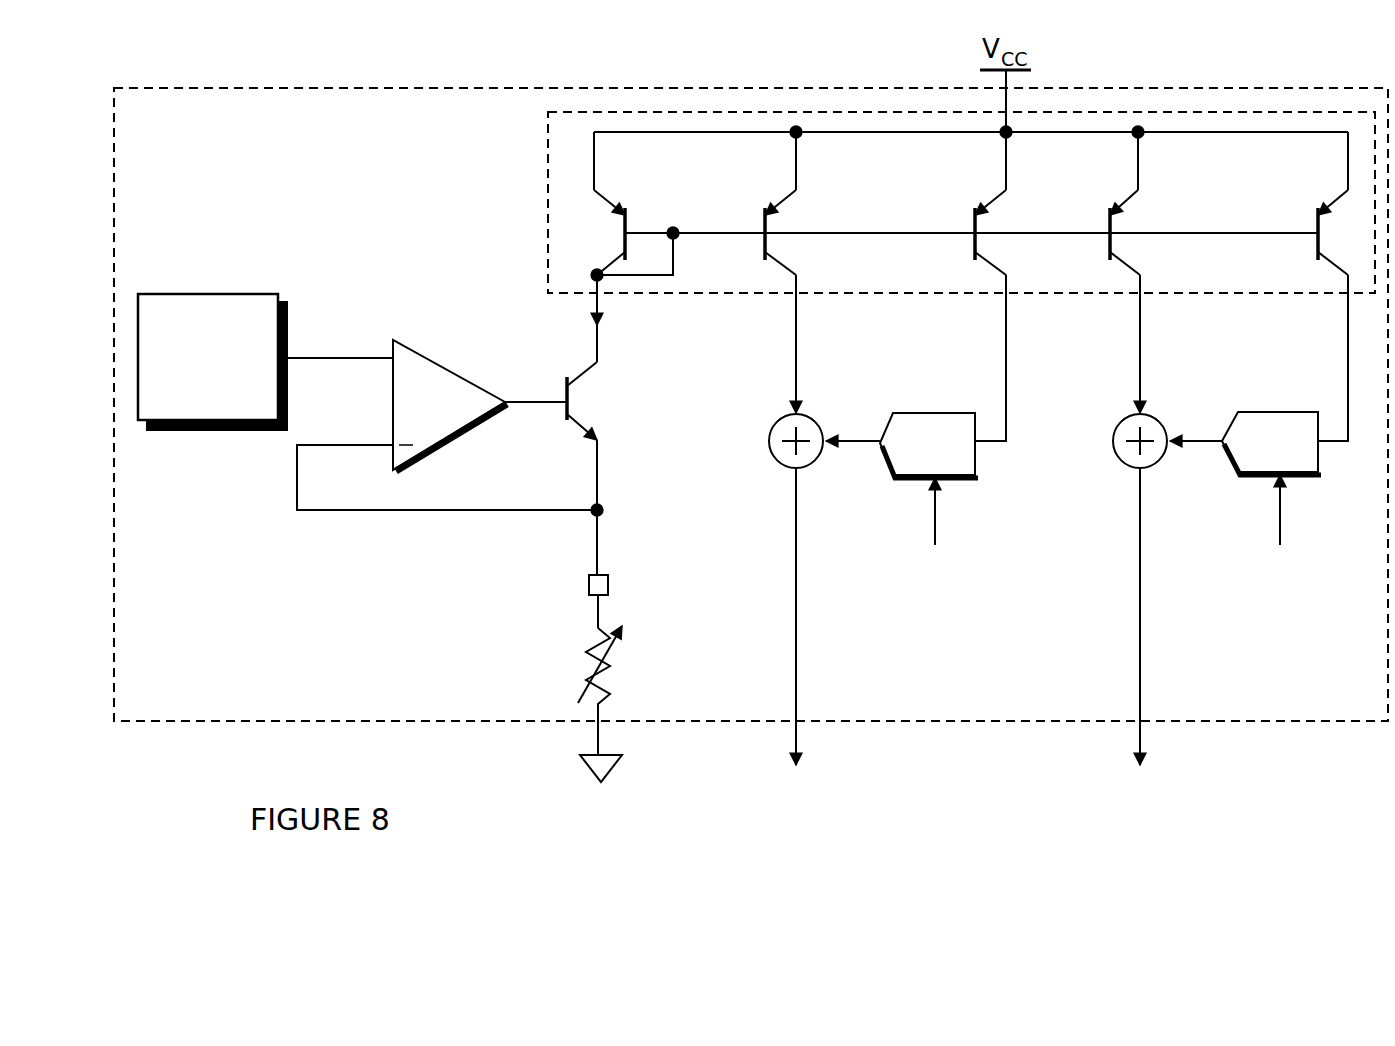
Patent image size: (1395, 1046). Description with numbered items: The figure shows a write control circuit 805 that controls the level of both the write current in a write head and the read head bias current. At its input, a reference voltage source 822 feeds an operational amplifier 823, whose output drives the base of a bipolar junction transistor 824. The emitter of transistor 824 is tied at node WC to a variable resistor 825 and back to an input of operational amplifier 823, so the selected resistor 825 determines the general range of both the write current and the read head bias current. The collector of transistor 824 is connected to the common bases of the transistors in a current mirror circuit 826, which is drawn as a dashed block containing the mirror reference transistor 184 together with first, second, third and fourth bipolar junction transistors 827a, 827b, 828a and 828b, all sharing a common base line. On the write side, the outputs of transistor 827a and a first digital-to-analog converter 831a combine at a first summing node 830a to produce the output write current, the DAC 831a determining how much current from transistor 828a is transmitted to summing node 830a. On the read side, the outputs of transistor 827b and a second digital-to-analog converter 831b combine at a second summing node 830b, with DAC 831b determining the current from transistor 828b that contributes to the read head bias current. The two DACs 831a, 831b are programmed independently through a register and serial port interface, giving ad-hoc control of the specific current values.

The write control circuit 805 is at (696, 86).
The current mirror circuit 826 is at (547, 206).
The current mirror reference transistor Q2 184 is at (632, 224).
The reference voltage source 822 is at (204, 298).
The operational amplifier 823 is at (447, 378).
The bipolar junction transistor 824 is at (562, 418).
The variable resistor 825 is at (598, 650).
The first bipolar junction transistor 827a is at (762, 245).
The third bipolar junction transistor 828a is at (972, 245).
The second bipolar junction transistor 827b is at (1107, 245).
The fourth bipolar junction transistor 828b is at (1315, 245).
The first summing node 830a is at (778, 455).
The first digital-to-analog converter 831a is at (898, 413).
The second summing node 830b is at (1122, 455).
The second digital-to-analog converter 831b is at (1242, 412).